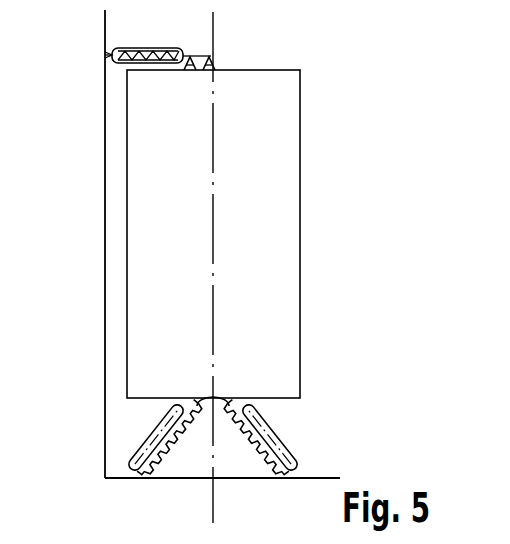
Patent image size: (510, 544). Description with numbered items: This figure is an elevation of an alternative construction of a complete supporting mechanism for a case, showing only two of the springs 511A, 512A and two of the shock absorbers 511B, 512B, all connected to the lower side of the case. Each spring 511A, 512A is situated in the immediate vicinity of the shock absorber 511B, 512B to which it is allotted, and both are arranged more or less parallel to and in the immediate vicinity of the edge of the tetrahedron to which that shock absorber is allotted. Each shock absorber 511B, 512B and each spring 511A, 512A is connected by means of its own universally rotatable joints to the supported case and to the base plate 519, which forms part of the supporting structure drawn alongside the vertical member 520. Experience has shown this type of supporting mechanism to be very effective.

The frame side wall 520 is at (85, 244).
The base plate 519 is at (225, 469).
The shock absorber 512B is at (141, 447).
The spring 512A is at (178, 443).
The shock absorber 511B is at (296, 441).
The spring 511A is at (248, 446).